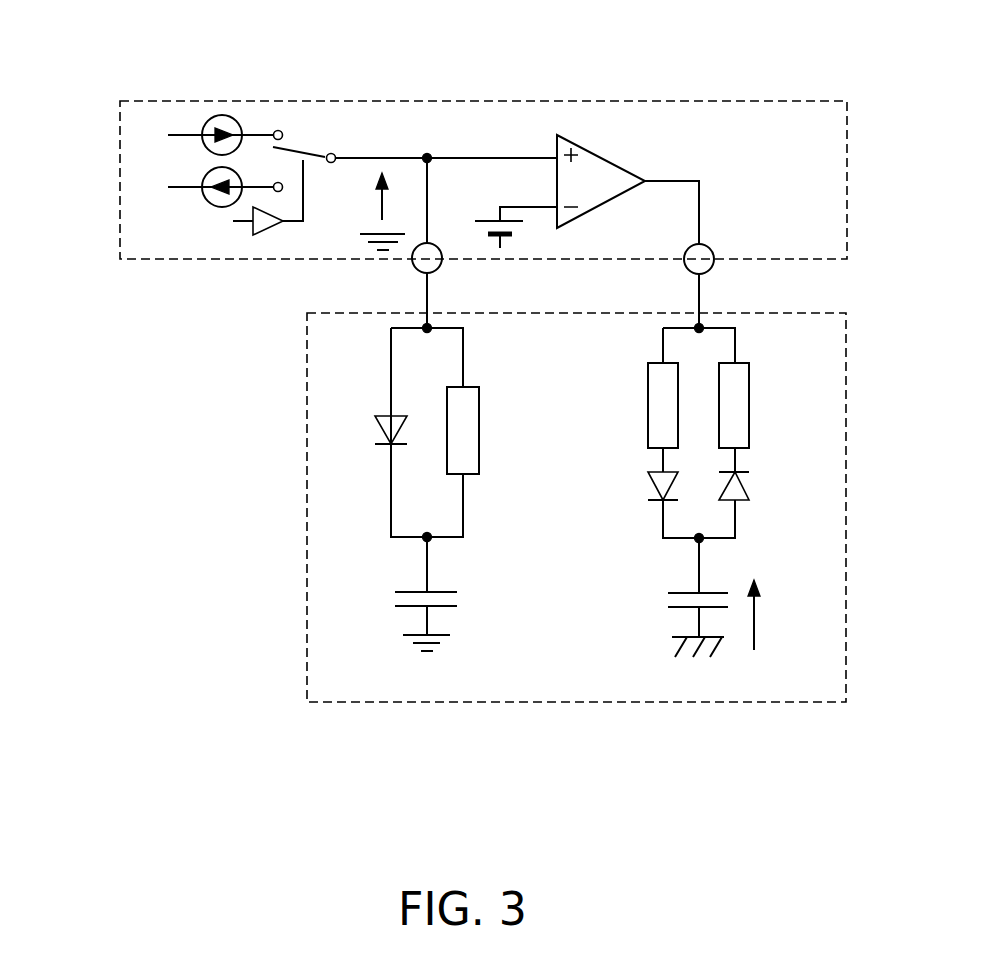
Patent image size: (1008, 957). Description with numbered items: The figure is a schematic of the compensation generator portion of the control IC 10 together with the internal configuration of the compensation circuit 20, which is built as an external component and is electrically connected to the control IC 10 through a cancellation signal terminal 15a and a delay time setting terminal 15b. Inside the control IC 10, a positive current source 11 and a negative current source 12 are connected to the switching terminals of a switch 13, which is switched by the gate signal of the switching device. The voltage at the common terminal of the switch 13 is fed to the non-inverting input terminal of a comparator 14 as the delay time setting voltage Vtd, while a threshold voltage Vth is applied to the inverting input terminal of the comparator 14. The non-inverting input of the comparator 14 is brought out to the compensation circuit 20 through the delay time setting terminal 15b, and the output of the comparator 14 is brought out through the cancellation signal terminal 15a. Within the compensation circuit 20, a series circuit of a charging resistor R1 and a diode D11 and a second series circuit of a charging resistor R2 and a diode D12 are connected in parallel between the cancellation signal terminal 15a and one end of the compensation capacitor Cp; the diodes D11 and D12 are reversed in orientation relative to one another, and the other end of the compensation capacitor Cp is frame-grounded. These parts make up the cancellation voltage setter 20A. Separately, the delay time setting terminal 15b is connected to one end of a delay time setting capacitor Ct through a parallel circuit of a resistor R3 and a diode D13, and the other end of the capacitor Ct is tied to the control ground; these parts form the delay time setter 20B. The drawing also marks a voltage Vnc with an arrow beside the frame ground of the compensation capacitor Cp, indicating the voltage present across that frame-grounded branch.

The control IC 10 is at (120, 158).
The positive current source 11 is at (221, 124).
The negative current source 12 is at (218, 173).
The switch 13 is at (305, 137).
The comparator 14 is at (602, 168).
The cancellation signal terminal 15a is at (700, 262).
The delay time setting terminal 15b is at (422, 259).
The compensation circuit 20 is at (362, 703).
The cancellation voltage setter 20A is at (743, 491).
The delay time setter 20B is at (366, 488).
The charging resistor R1 is at (657, 408).
The charging resistor R2 is at (740, 405).
The resistor R3 is at (463, 425).
The diode D11 is at (642, 484).
The diode D12 is at (750, 486).
The diode D13 is at (373, 432).
The delay time setting capacitor Ct is at (345, 555).
The compensation capacitor Cp is at (680, 597).
The delay time setting voltage Vtd is at (373, 211).
The threshold voltage Vth is at (504, 220).
The noise voltage Vnc is at (772, 615).